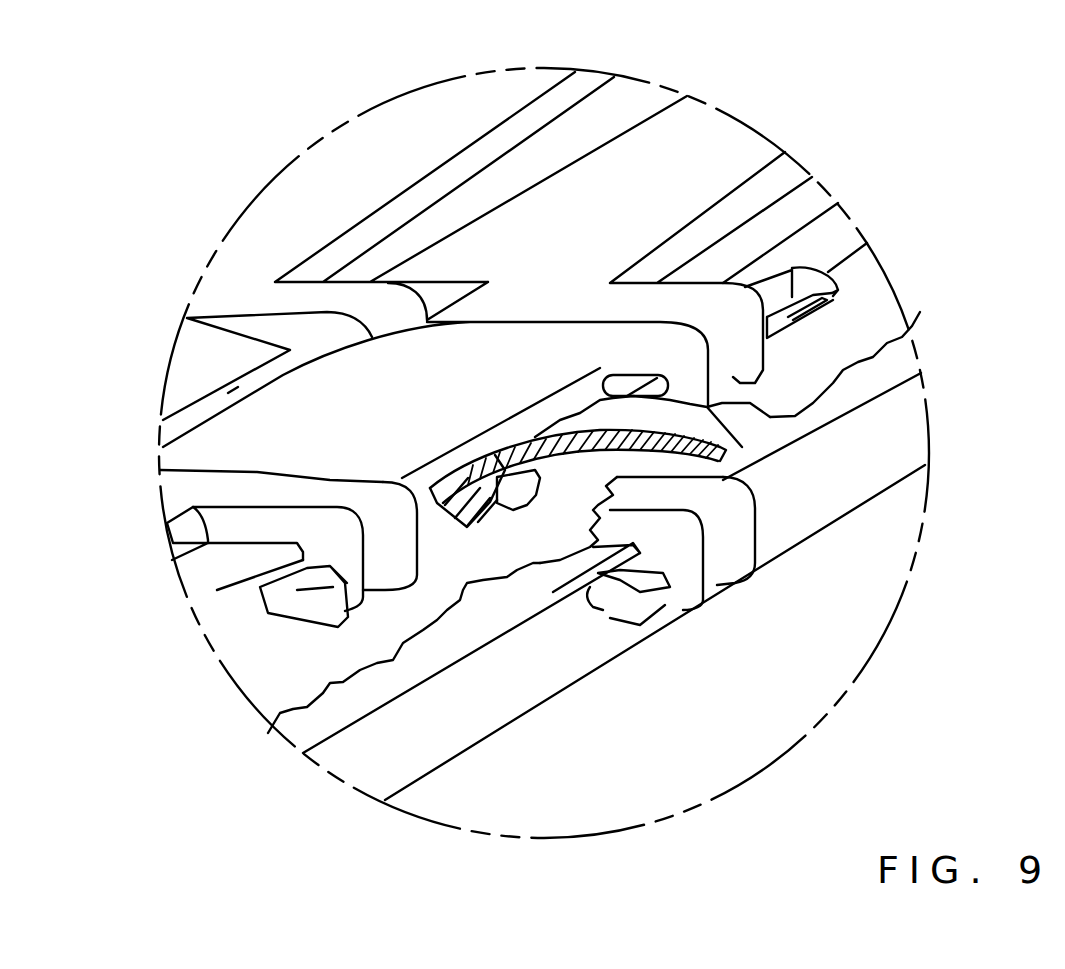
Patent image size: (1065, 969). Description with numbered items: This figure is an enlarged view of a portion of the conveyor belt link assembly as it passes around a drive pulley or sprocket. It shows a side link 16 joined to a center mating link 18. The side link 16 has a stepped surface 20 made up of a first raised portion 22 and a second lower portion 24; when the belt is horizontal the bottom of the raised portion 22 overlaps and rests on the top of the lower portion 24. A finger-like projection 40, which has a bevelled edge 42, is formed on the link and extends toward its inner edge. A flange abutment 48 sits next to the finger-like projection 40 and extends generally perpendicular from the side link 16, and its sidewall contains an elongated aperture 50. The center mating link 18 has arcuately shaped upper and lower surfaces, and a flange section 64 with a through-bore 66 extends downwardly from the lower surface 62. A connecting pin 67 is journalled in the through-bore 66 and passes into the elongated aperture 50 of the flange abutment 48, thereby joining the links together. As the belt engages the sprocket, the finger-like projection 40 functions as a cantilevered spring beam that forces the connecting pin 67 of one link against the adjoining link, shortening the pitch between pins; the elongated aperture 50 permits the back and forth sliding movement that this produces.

The side link 16 is at (544, 441).
The center mating link 18 is at (428, 394).
The stepped surface 20 is at (544, 433).
The first raised portion 22 is at (578, 239).
The second lower portion 24 is at (822, 227).
The finger-like projection 40 is at (600, 601).
The bevelled edge 42 is at (766, 687).
The flange abutment 48 is at (623, 538).
The elongated aperture 50 is at (431, 452).
The lower surface 62 is at (501, 632).
The flange section 64 is at (400, 649).
The through-bore 66 is at (469, 259).
The connecting pin 67 is at (554, 390).